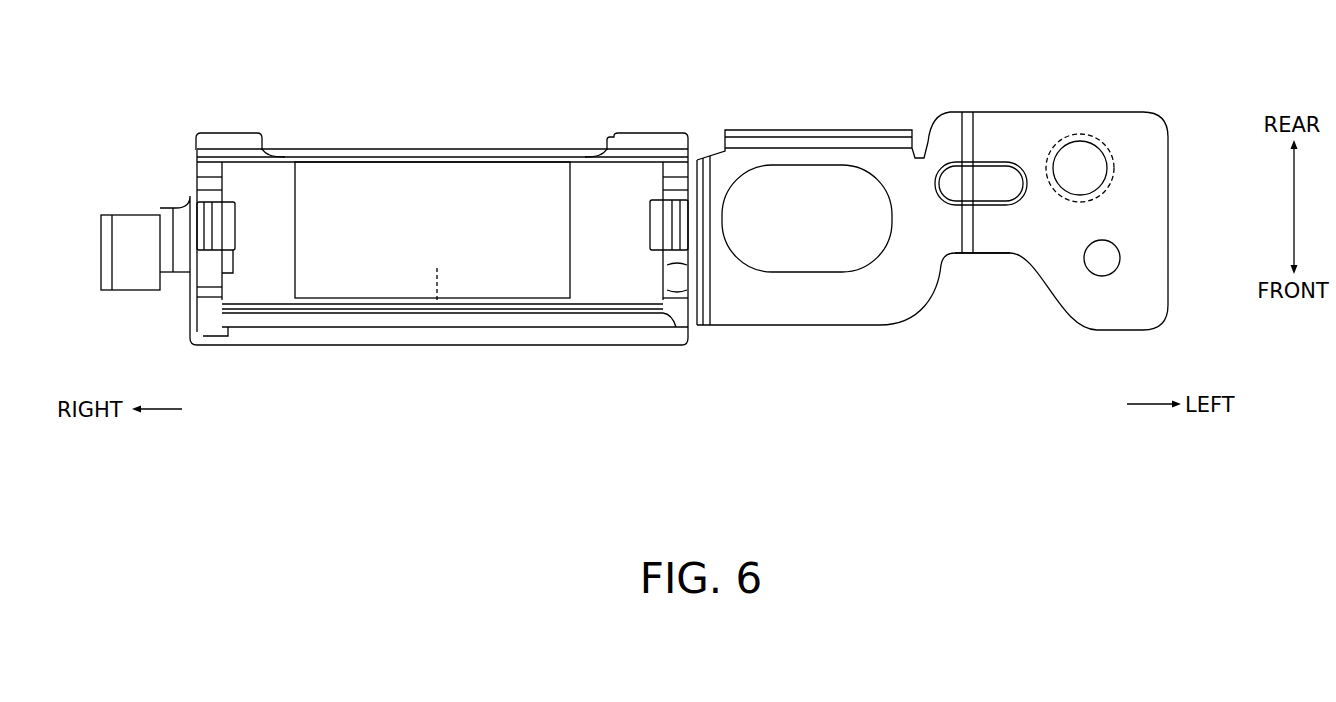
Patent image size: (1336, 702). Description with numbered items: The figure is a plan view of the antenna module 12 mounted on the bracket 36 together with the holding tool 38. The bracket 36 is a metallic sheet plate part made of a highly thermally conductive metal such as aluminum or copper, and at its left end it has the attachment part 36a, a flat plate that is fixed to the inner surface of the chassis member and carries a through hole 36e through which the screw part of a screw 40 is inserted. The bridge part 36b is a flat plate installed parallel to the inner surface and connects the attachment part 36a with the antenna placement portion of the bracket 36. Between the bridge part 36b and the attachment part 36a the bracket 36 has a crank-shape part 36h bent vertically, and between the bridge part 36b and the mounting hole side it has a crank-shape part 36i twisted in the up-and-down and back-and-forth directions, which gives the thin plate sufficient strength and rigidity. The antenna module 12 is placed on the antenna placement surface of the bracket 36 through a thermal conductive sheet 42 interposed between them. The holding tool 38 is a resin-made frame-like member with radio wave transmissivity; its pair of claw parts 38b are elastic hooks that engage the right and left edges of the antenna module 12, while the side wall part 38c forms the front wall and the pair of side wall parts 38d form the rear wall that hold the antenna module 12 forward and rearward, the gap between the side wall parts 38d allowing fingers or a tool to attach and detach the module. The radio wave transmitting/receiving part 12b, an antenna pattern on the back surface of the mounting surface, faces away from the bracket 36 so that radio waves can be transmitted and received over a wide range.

The antenna module 12 is at (432, 183).
The radio wave transmitting/receiving part 12b is at (353, 183).
The bracket 36 is at (957, 94).
The attachment part 36a is at (1150, 199).
The bridge part 36b is at (808, 302).
The through hole 36e is at (1055, 173).
The crank-shape part 36h is at (972, 256).
The crank-shape part 36i is at (697, 314).
The holding tool 38 is at (516, 355).
The claw part 38b is at (226, 226).
The side wall part 38c is at (366, 318).
The side wall part 38d is at (234, 142).
The screw 40 is at (1089, 134).
The thermal conductive sheet 42 is at (438, 300).